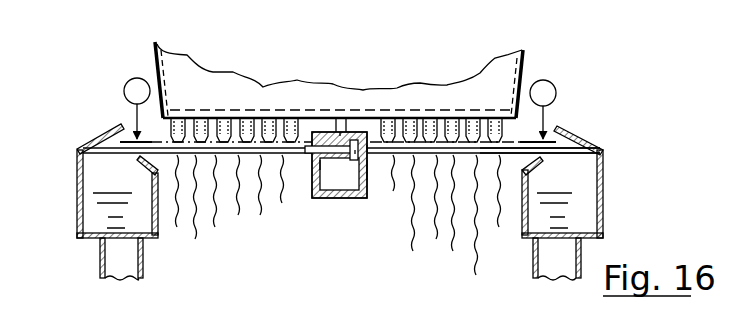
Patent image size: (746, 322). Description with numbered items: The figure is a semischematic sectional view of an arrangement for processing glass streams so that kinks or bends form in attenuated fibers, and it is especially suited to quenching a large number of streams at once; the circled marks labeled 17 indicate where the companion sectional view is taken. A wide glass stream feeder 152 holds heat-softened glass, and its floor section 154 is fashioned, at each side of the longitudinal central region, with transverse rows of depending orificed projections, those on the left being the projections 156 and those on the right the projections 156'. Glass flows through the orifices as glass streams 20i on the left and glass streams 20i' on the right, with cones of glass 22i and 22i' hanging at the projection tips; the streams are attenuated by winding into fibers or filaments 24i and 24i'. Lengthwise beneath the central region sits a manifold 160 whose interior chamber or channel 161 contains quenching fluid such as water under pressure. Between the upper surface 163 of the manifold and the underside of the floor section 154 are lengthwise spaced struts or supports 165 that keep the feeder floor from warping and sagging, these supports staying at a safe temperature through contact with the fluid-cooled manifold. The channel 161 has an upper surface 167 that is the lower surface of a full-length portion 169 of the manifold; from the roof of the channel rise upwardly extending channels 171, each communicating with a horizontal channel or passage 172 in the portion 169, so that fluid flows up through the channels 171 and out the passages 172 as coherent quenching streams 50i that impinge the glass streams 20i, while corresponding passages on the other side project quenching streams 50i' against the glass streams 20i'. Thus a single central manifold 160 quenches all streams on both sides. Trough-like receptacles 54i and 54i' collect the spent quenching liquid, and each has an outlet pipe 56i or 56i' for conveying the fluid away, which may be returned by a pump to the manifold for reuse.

The glass stream feeder 152 is at (532, 30).
The projections 156 is at (234, 94).
The projections 156' is at (441, 105).
The portion 169 is at (317, 150).
The struts or supports 165 is at (336, 130).
The horizontal channel or passage 172 is at (323, 142).
The upper surface 163 is at (355, 150).
The upwardly extending channels 171 is at (367, 150).
The manifold 160 is at (338, 142).
The interior chamber or channel 161 is at (348, 186).
The upper surface 167 is at (318, 165).
The floor section 154 is at (370, 140).
The glass streams 20i is at (341, 118).
The glass streams 20i' is at (530, 119).
The cones of glass 22i is at (230, 206).
The cones of glass 22i' is at (437, 211).
The fibers or filaments 24i is at (157, 276).
The fibers or filaments 24i' is at (440, 260).
The quenching streams 50i is at (82, 202).
The quenching streams 50i' is at (604, 203).
The trough-like receptacle 54i is at (82, 195).
The trough-like receptacle 54i' is at (599, 196).
The outlet pipe 56i is at (94, 259).
The outlet pipe 56i' is at (603, 247).
The section line indicator 17 is at (338, 110).